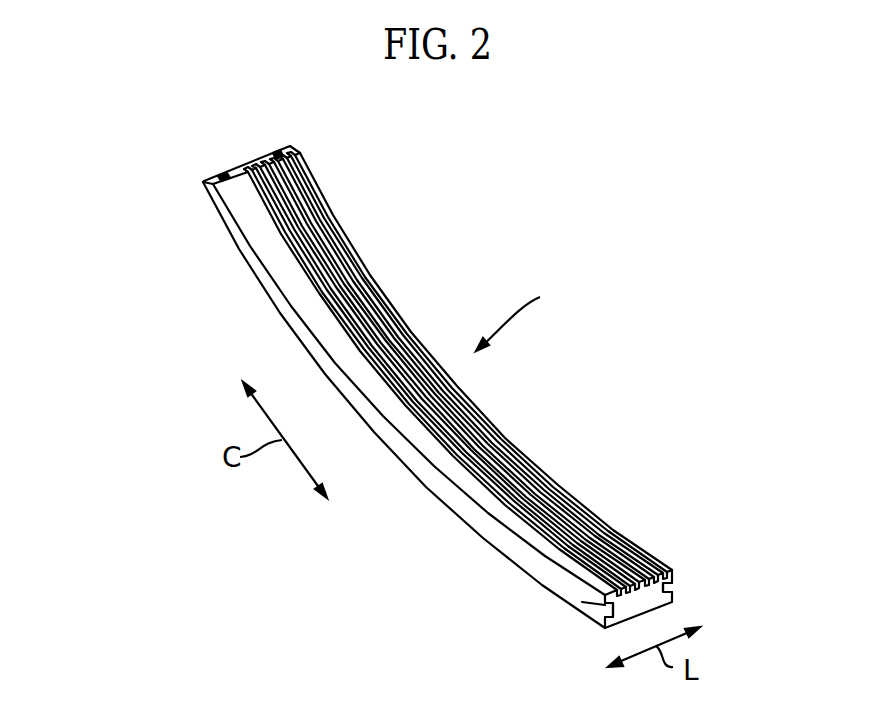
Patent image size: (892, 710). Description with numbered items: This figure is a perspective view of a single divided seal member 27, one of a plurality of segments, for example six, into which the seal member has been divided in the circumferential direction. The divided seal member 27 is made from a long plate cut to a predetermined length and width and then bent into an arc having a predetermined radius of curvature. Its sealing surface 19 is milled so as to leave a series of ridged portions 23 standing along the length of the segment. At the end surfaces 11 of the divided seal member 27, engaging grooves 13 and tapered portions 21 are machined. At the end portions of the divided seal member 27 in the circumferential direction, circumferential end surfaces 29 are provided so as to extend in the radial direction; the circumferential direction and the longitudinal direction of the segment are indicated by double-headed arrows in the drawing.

The end surface 11 is at (461, 366).
The engaging groove 13 is at (597, 607).
The sealing surface 19 is at (260, 217).
The tapered portion 21 is at (305, 302).
The ridged portion 23 is at (628, 545).
The divided seal member 27 is at (524, 313).
The circumferential end surface 29 is at (255, 161).